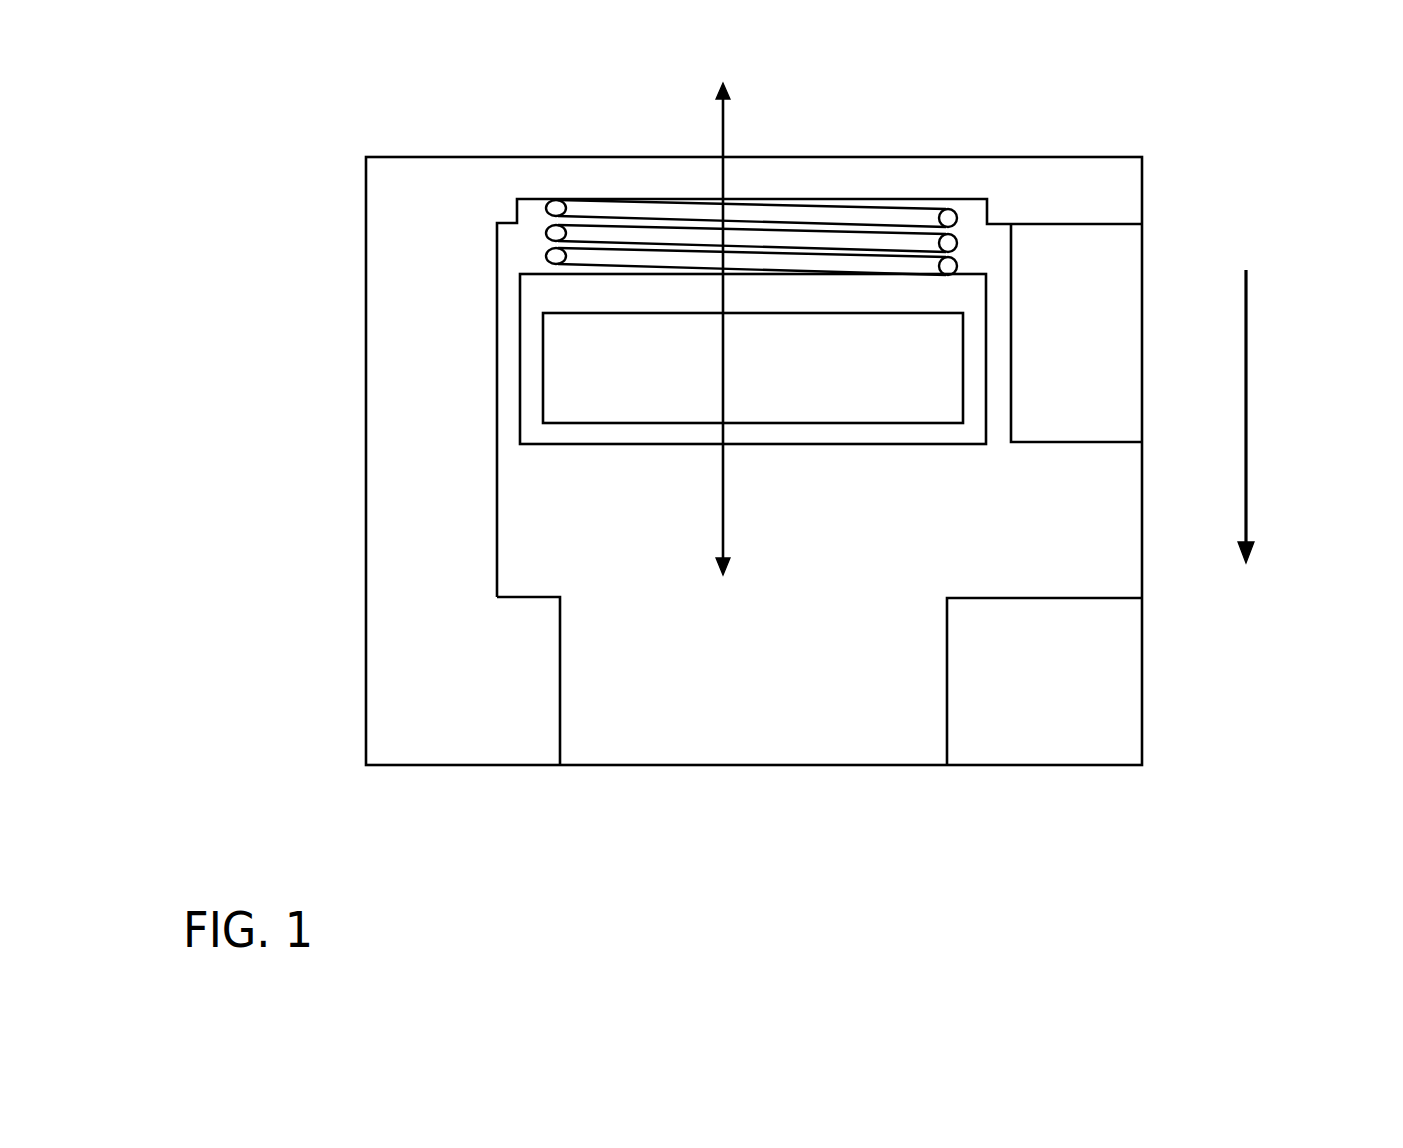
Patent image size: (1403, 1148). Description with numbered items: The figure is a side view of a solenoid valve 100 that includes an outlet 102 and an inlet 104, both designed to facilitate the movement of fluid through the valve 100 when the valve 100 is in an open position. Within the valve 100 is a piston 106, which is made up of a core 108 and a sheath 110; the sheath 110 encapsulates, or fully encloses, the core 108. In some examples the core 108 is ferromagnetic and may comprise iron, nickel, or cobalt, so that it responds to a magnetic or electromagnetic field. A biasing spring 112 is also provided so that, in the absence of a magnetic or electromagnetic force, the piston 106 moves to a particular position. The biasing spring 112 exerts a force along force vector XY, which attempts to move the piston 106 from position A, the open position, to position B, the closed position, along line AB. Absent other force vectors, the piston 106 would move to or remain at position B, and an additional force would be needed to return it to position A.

The solenoid valve 100 is at (1267, 95).
The outlet 102 is at (1108, 494).
The inlet 104 is at (773, 715).
The piston 106 is at (992, 361).
The core 108 is at (563, 341).
The sheath 110 is at (520, 378).
The biasing spring 112 is at (923, 223).